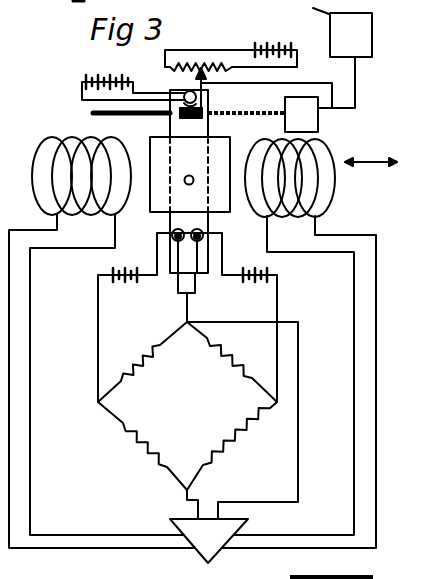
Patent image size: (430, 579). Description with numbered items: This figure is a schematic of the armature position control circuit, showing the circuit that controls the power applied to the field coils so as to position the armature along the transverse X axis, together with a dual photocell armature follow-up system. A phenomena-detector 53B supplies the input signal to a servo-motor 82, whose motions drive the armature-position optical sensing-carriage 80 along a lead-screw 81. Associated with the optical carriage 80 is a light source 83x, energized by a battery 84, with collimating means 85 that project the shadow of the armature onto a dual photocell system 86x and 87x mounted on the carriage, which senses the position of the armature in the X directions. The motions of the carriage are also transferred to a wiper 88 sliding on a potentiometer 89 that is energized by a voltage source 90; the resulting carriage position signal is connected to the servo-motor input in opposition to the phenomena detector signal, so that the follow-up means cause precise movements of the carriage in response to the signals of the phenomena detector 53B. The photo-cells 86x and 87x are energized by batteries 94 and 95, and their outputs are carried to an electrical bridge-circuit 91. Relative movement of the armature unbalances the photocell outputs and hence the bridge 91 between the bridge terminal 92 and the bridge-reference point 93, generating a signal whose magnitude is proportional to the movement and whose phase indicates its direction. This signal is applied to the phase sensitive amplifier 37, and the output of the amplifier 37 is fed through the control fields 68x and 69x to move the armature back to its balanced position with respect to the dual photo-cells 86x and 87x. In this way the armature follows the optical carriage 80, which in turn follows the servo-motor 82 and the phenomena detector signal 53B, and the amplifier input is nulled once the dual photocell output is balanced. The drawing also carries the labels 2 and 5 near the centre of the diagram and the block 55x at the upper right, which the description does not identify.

The test specimen 2 is at (196, 174).
The section line 5 is at (291, 172).
The phase sensitive amplifier 37 is at (209, 541).
The phenomena-detector 53B is at (306, 9).
The control unit 55x is at (345, 60).
The control field 68x is at (100, 342).
The control field 69x is at (303, 343).
The optical sensing-carriage 80 is at (185, 129).
The lead-screw 81 is at (225, 115).
The servo-motor 82 is at (290, 111).
The light source 83x is at (264, 88).
The battery 84 is at (133, 79).
The collimating means 85 is at (194, 132).
The photo-cell 86x is at (152, 248).
The photo-cell 87x is at (220, 248).
The wiper 88 is at (186, 90).
The potentiometer 89 is at (206, 73).
The voltage source 90 is at (273, 42).
The electrical bridge-circuit 91 is at (187, 406).
The bridge terminal 92 is at (142, 362).
The bridge-reference point 93 is at (144, 446).
The battery 94 is at (127, 317).
The battery 95 is at (249, 317).